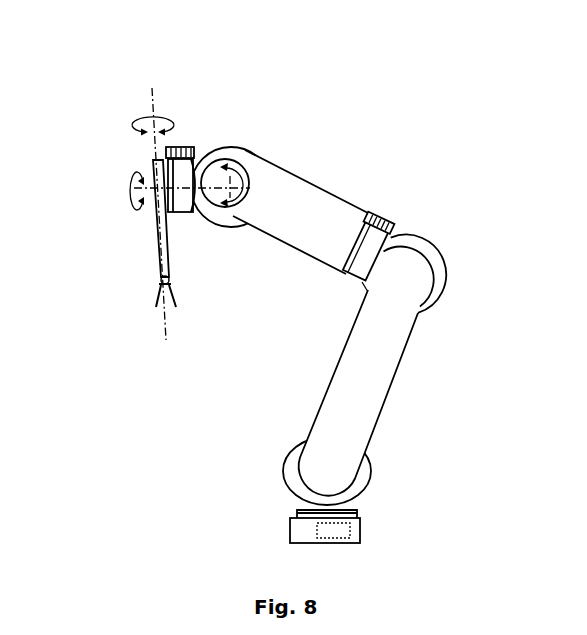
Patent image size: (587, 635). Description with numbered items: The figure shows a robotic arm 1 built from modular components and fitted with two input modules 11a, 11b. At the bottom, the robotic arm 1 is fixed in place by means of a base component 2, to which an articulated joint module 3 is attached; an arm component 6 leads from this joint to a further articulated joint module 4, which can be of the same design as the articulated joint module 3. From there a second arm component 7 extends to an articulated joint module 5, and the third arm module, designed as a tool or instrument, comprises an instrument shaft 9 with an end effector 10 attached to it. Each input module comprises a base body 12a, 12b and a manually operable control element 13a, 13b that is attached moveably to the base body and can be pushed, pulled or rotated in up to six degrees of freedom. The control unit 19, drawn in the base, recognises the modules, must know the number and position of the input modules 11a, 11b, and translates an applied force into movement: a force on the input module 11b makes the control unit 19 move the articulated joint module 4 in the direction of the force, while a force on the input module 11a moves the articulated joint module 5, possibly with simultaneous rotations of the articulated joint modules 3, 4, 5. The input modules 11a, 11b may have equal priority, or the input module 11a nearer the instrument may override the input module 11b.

The robotic arm 1 is at (394, 99).
The base component 2 is at (300, 533).
The articulated joint module 3 is at (358, 483).
The articulated joint module 4 is at (437, 266).
The articulated joint module 5 is at (255, 162).
The arm component 6 is at (375, 355).
The arm component 7 is at (307, 215).
The instrument shaft 9 is at (153, 217).
The end effector 10 is at (157, 285).
The input module 11a is at (130, 112).
The input module 11b is at (407, 212).
The base body 12a is at (182, 177).
The base body 12b is at (358, 258).
The control element 13a is at (174, 147).
The control element 13b is at (383, 216).
The control unit 19 is at (340, 530).